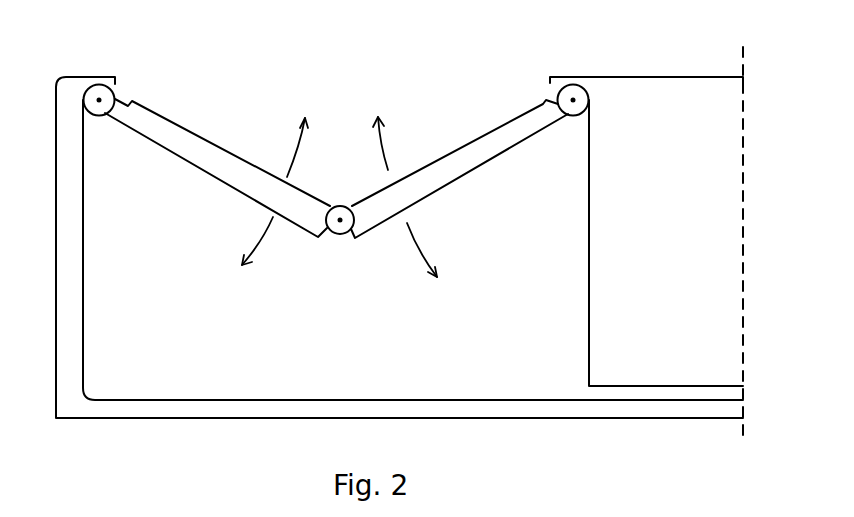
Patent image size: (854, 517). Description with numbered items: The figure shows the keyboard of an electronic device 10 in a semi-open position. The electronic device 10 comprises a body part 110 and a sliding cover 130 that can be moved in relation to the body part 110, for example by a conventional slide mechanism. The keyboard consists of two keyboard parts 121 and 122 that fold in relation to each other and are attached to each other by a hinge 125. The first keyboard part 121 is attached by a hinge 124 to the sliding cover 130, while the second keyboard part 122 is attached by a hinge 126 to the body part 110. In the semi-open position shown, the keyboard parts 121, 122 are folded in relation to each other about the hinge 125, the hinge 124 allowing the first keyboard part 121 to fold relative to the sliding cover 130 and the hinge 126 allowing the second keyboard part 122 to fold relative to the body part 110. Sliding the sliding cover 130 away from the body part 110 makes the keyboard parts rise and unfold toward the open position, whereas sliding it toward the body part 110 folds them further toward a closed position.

The electronic device 10 is at (48, 53).
The body part 110 is at (687, 192).
The first keyboard part 121 is at (190, 132).
The second keyboard part 122 is at (443, 152).
The hinge 124 is at (99, 117).
The hinge 125 is at (340, 236).
The hinge 126 is at (570, 117).
The sliding cover 130 is at (120, 418).